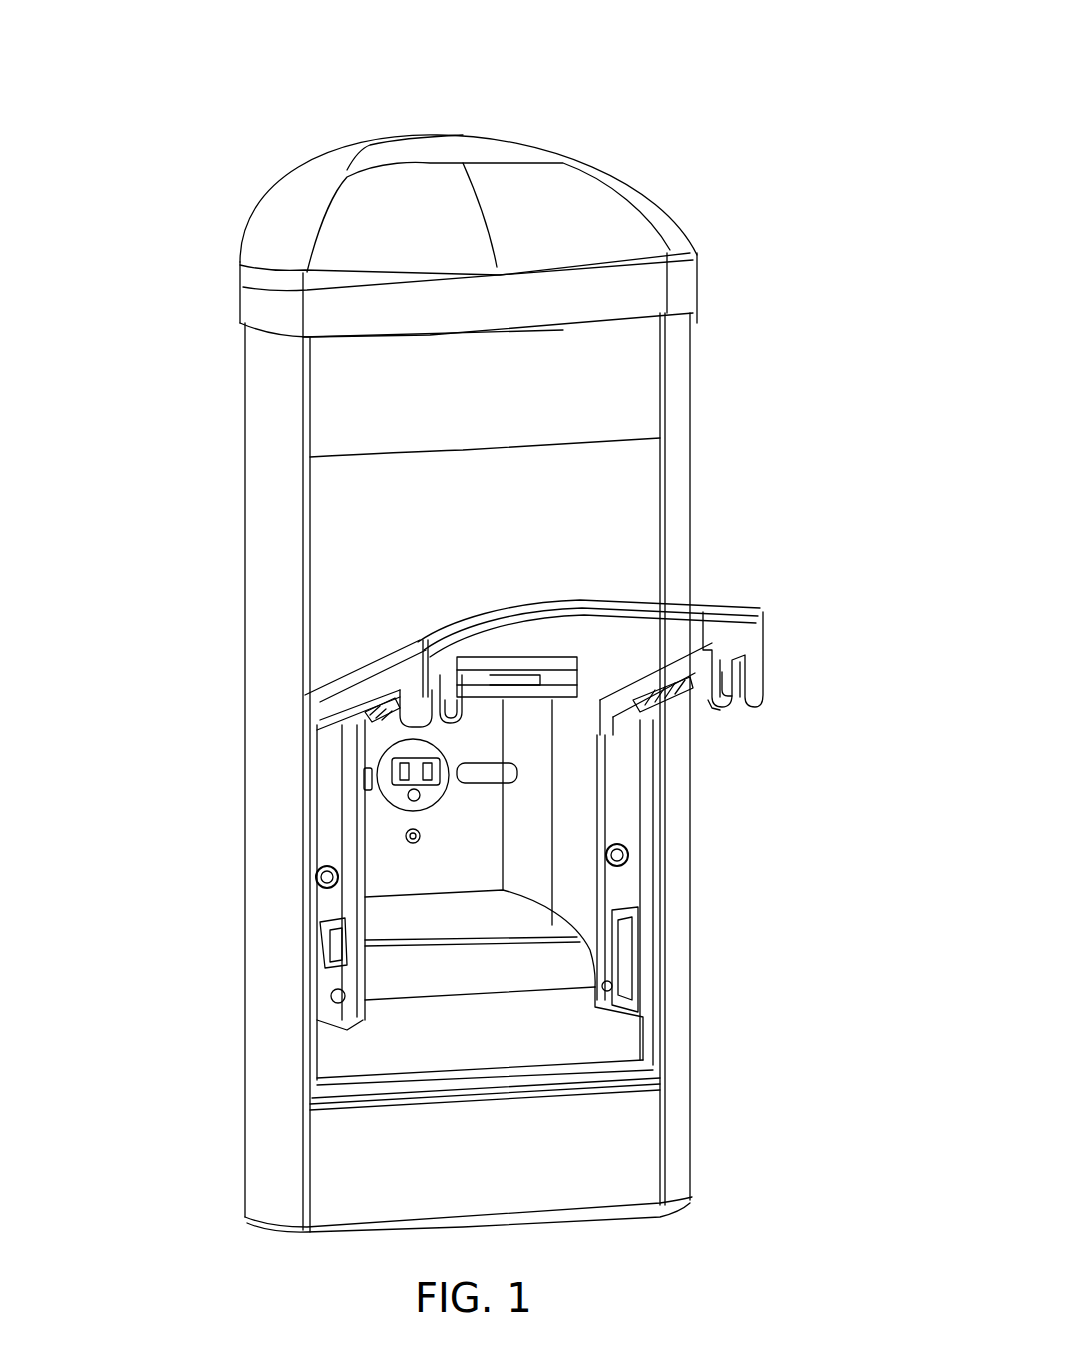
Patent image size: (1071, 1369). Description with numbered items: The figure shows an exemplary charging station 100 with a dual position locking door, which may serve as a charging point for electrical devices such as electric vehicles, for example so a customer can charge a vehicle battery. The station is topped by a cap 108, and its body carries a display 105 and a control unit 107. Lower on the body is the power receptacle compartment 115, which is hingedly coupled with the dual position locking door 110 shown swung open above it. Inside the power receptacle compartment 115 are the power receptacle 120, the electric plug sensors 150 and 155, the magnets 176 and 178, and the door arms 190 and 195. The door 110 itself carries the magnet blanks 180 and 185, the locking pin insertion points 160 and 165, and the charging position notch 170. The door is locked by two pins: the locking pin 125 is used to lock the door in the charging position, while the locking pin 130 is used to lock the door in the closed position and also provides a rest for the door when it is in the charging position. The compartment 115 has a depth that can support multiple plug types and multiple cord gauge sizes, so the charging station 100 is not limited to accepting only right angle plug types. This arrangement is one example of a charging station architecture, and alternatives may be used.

The charging station 100 is at (636, 97).
The cap 108 is at (627, 193).
The display 105 is at (635, 382).
The control unit 107 is at (640, 488).
The dual position locking door 110 is at (700, 602).
The locking pin insertion point 160 is at (447, 707).
The locking pin insertion point 165 is at (713, 675).
The magnet blank 180 is at (395, 708).
The magnet blank 185 is at (677, 697).
The charging position notch 170 is at (713, 707).
The power receptacle 120 is at (412, 750).
The electric plug sensor 150 is at (367, 780).
The electric plug sensor 155 is at (463, 772).
The magnet 176 is at (327, 873).
The magnet 178 is at (613, 853).
The door arm 190 is at (330, 938).
The door arm 195 is at (610, 935).
The locking pin 125 is at (330, 997).
The locking pin 130 is at (610, 983).
The power receptacle compartment 115 is at (477, 972).